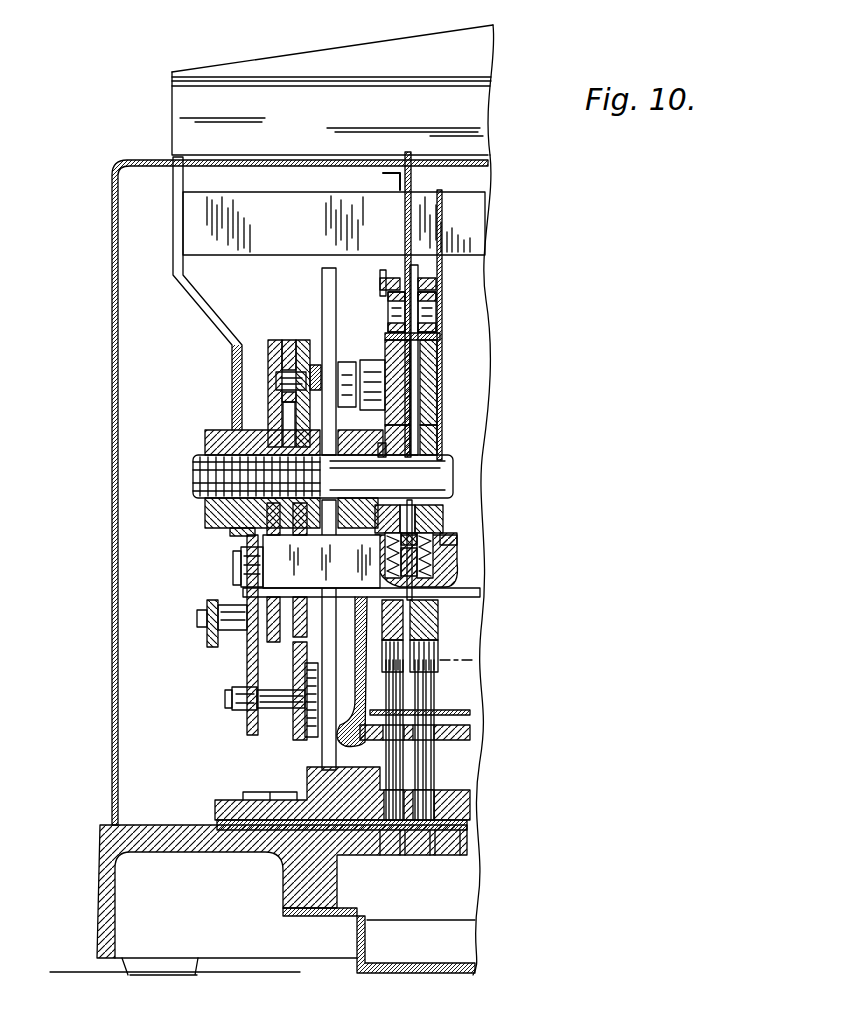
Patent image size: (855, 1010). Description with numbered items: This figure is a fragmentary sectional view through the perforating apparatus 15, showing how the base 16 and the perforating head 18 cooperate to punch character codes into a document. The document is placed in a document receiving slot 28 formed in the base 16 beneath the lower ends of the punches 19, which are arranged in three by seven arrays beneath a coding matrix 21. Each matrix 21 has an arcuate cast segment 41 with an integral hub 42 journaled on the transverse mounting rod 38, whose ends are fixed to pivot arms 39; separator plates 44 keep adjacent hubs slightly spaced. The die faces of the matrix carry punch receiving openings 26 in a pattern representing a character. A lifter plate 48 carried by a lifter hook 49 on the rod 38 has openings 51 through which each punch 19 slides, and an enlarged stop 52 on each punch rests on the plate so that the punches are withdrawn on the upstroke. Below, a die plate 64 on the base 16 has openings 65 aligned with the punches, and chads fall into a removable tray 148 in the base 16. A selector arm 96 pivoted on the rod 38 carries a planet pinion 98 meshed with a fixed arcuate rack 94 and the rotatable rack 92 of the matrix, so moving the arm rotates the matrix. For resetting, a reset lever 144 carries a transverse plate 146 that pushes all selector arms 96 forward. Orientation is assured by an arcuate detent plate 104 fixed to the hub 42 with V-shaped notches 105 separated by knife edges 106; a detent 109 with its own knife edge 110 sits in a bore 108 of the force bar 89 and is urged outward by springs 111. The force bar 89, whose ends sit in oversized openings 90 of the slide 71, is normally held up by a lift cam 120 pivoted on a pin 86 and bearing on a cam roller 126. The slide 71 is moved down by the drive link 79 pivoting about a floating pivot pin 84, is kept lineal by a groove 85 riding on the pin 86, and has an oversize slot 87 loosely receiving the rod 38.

The reset lever 144 is at (341, 55).
The transverse plate 146 is at (290, 200).
The perforating apparatus 15 is at (524, 212).
The V-shaped notches 105 is at (183, 250).
The perforating head 18 is at (213, 378).
The selector arm 96 is at (405, 214).
The fixed arcuate rack 94 is at (430, 290).
The planet pinion 98 is at (420, 330).
The rotatable rack 92 is at (425, 345).
The arcuate cast segment 41 is at (437, 362).
The separator plates 44 is at (418, 386).
The arcuate detent plate 104 is at (437, 432).
The pivot arms 39 is at (316, 365).
The slide 71 is at (278, 345).
The floating pivot pin 84 is at (274, 375).
The drive link 79 is at (285, 388).
The oversize slot 87 is at (268, 445).
The mounting rod 38 is at (455, 475).
The hub 42 is at (440, 512).
The knife edge 106 is at (450, 540).
The detent 109 is at (445, 547).
The springs 111 is at (457, 554).
The bores 108 is at (457, 567).
The knife edge 110 is at (354, 557).
The oversized openings 90 is at (300, 595).
The force bar 89 is at (468, 585).
The cam roller 126 is at (245, 550).
The lift cam 120 is at (248, 660).
The groove 85 is at (297, 662).
The pin 86 is at (271, 712).
The lifter hook 49 is at (343, 738).
The coding matrix 21 is at (440, 632).
The punch receiving openings 26 is at (440, 652).
The punches 19 is at (416, 772).
The stop 52 is at (462, 713).
The lifter plate 48 is at (440, 735).
The opening 51 is at (420, 742).
The document receiving slot 28 is at (355, 822).
The openings 65 is at (386, 830).
The die plate 64 is at (427, 830).
The base 16 is at (102, 857).
The removable tray 148 is at (460, 940).